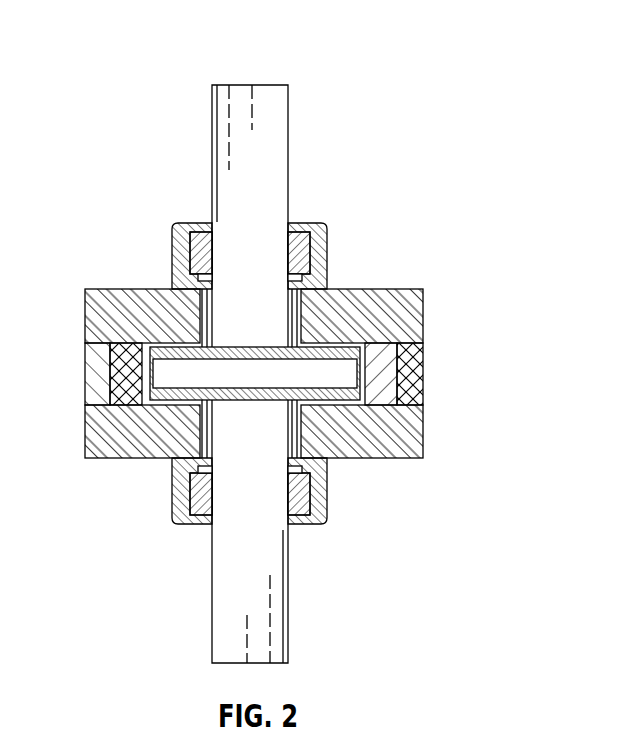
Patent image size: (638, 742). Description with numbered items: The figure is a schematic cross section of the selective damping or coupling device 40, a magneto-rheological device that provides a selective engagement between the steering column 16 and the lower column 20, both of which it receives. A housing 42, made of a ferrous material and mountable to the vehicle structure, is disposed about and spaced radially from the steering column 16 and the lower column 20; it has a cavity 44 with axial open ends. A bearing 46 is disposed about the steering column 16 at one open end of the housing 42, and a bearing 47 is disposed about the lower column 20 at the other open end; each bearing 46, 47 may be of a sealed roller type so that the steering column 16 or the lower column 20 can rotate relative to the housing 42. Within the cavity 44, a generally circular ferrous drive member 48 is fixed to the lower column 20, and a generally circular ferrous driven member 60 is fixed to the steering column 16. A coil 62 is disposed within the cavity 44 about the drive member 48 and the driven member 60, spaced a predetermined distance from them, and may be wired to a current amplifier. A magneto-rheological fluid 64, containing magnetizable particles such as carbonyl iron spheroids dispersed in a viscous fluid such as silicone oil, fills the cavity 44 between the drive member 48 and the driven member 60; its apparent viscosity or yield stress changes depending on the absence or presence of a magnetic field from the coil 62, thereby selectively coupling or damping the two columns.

The selective damping or coupling device 40 is at (363, 58).
The steering column 16 is at (222, 132).
The lower column 20 is at (277, 600).
The housing 42 is at (415, 432).
The cavity 44 is at (142, 382).
The coil 62 is at (388, 368).
The bearing 46 is at (318, 248).
The bearing 47 is at (181, 526).
The drive member 48 is at (281, 398).
The driven member 60 is at (271, 350).
The magneto-rheological fluid 64 is at (244, 396).